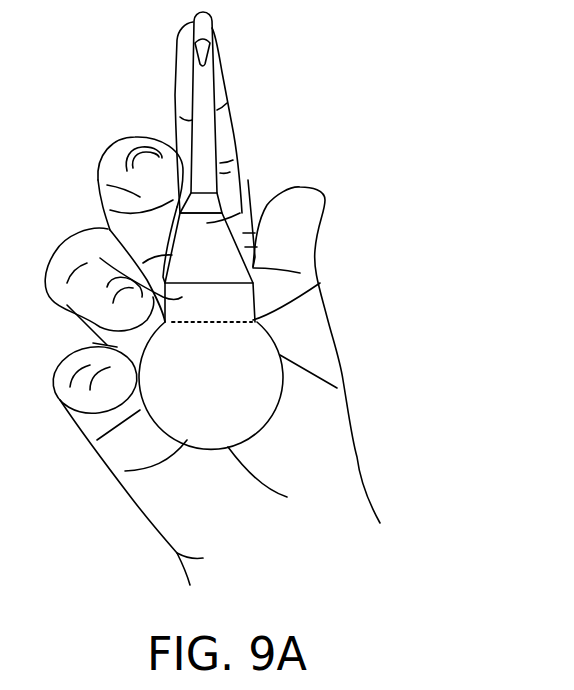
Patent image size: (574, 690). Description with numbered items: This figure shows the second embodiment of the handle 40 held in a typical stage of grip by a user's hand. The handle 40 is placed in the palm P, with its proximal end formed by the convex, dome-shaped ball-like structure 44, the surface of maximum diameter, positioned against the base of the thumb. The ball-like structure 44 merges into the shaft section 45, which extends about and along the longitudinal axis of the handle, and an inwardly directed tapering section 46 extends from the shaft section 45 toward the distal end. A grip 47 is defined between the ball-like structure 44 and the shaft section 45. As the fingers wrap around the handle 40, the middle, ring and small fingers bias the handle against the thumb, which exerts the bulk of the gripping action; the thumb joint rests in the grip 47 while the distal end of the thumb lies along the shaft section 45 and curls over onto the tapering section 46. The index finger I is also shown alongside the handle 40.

The handle 40 is at (125, 471).
The ball-like structure 44 is at (226, 404).
The shaft section 45 is at (108, 229).
The tapering section 46 is at (250, 193).
The grip 47 is at (323, 283).
The index finger I is at (311, 481).
The palm P is at (257, 544).